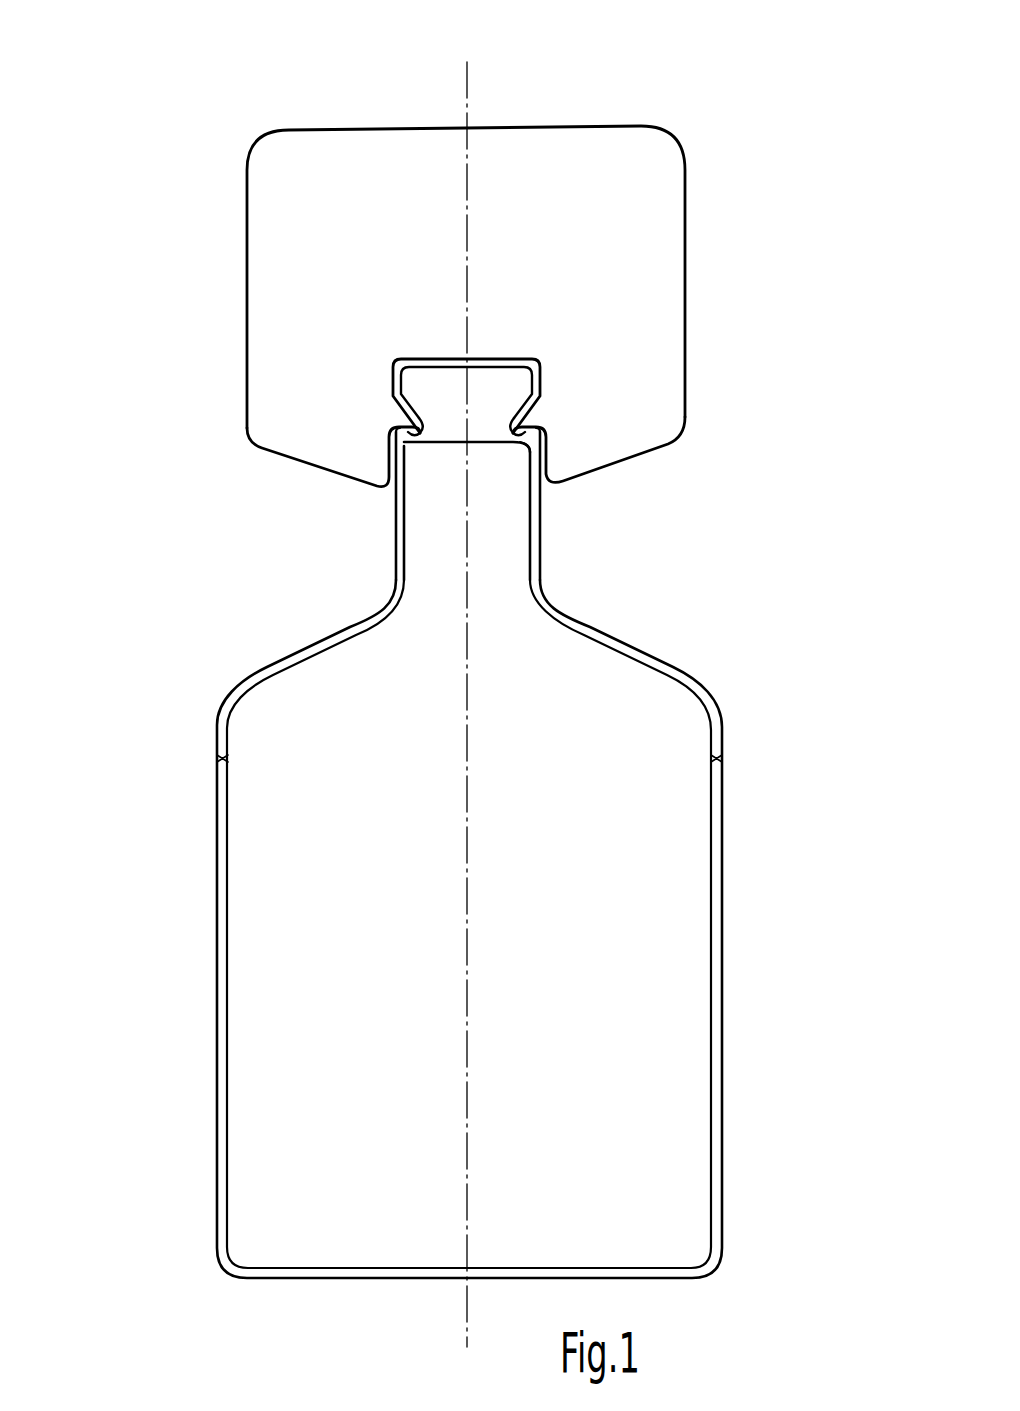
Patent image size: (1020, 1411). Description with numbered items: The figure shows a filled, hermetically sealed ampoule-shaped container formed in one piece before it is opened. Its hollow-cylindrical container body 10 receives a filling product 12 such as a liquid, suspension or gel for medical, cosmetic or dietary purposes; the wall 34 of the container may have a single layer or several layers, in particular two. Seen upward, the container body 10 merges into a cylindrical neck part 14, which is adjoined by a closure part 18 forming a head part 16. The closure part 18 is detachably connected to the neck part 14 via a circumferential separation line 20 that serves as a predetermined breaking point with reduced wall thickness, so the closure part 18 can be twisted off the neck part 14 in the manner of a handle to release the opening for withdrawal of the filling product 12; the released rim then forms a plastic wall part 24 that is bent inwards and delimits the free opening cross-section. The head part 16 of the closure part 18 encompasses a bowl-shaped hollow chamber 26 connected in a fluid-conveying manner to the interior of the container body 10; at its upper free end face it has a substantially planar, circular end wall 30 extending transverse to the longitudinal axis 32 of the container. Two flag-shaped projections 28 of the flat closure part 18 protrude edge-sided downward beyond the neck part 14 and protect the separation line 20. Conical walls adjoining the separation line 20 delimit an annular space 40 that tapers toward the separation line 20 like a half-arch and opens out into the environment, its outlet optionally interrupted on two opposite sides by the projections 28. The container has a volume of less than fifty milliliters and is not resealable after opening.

The container body 10 is at (393, 853).
The filling product 12 is at (265, 1020).
The neck part 14 is at (538, 548).
The head part 16 is at (441, 334).
The closure part 18 is at (278, 253).
The separation line 20 is at (447, 440).
The plastic wall part 24 is at (507, 442).
The hollow chamber 26 is at (497, 393).
The flag-shaped projections 28 is at (370, 452).
The end wall 30 is at (453, 360).
The longitudinal axis 32 is at (470, 108).
The wall 34 is at (217, 795).
The annular space 40 is at (533, 413).